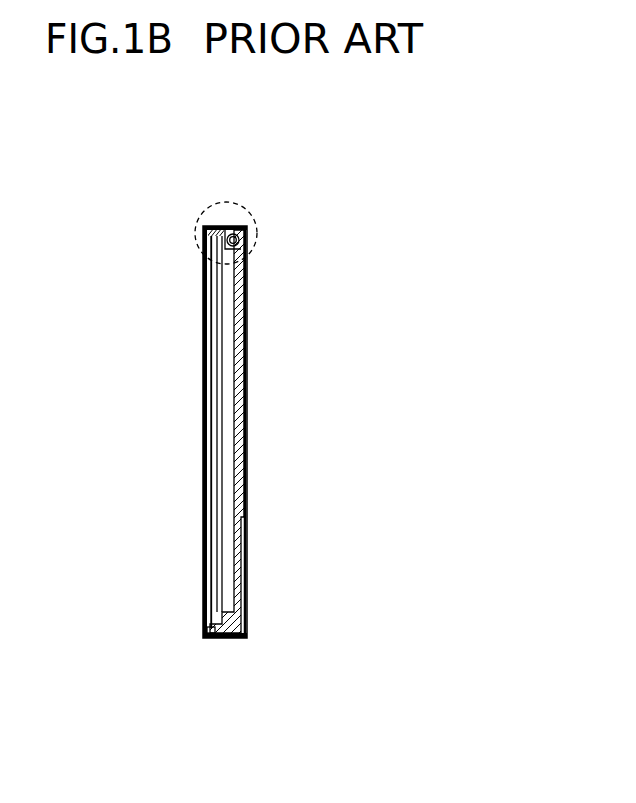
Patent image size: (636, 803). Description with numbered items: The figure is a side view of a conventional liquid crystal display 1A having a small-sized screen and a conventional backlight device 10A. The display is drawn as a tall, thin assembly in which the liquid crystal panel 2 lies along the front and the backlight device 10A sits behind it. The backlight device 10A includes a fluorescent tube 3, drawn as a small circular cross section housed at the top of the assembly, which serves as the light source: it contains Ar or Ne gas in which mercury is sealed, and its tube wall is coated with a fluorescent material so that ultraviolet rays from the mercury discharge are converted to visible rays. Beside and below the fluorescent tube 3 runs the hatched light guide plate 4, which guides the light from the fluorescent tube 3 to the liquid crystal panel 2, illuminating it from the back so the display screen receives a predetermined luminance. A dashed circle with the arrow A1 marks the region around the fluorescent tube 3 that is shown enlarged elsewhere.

The liquid crystal display 1A is at (191, 139).
The backlight device 10A is at (248, 233).
The arrow A1 is at (240, 211).
The fluorescent tube 3 is at (240, 244).
The liquid crystal panel 2 is at (213, 318).
The light guide plate 4 is at (228, 360).